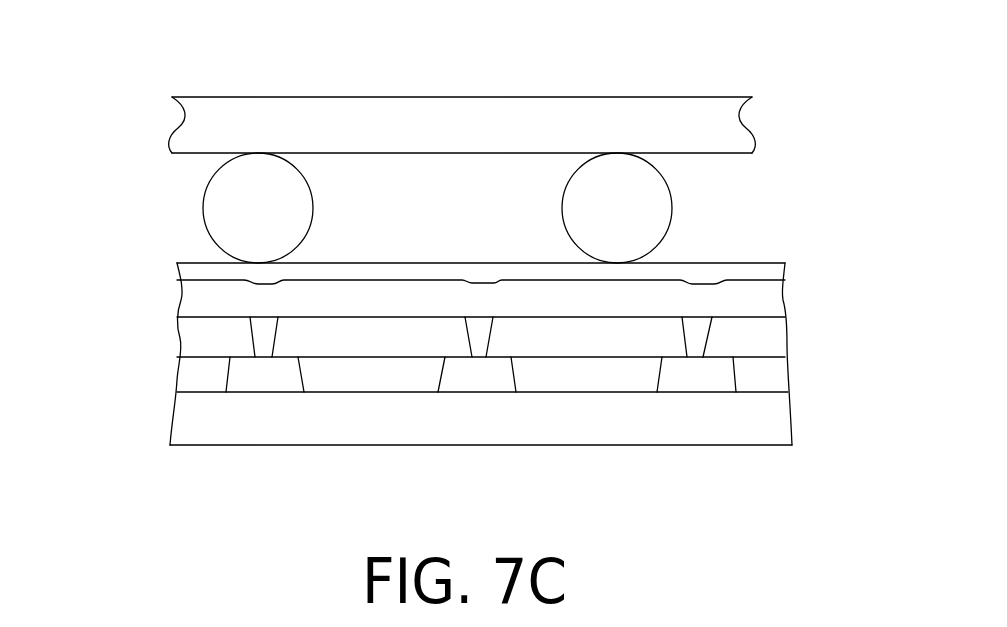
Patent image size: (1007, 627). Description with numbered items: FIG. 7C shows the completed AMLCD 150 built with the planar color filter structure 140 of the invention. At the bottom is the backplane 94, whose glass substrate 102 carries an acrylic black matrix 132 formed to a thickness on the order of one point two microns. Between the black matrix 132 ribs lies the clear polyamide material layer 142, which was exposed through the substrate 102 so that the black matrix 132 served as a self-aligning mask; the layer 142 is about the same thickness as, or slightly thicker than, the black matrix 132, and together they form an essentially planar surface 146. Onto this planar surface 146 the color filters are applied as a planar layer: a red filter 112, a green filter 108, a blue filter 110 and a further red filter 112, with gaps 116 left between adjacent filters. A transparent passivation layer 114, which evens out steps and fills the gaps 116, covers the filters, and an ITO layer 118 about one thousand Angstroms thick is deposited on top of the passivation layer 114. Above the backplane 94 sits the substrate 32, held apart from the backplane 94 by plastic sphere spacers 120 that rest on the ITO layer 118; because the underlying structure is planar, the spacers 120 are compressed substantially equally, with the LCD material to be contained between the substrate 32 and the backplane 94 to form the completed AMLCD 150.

The substrate 32 is at (420, 113).
The completed AMLCD 150 is at (776, 70).
The plastic sphere spacers 120 is at (283, 226).
The color filter structure 140 is at (140, 320).
The ITO layer 118 is at (200, 270).
The passivation layer 114 is at (408, 308).
The red filter 112 is at (767, 332).
The green filter 108 is at (323, 342).
The blue filter 110 is at (625, 340).
The gaps 116 is at (478, 332).
The acrylic black matrix 132 is at (257, 378).
The clear polyamide material layer 142 is at (370, 380).
The glass substrate 102 is at (600, 446).
The backplane 94 is at (368, 446).
The planar surface 146 is at (338, 368).